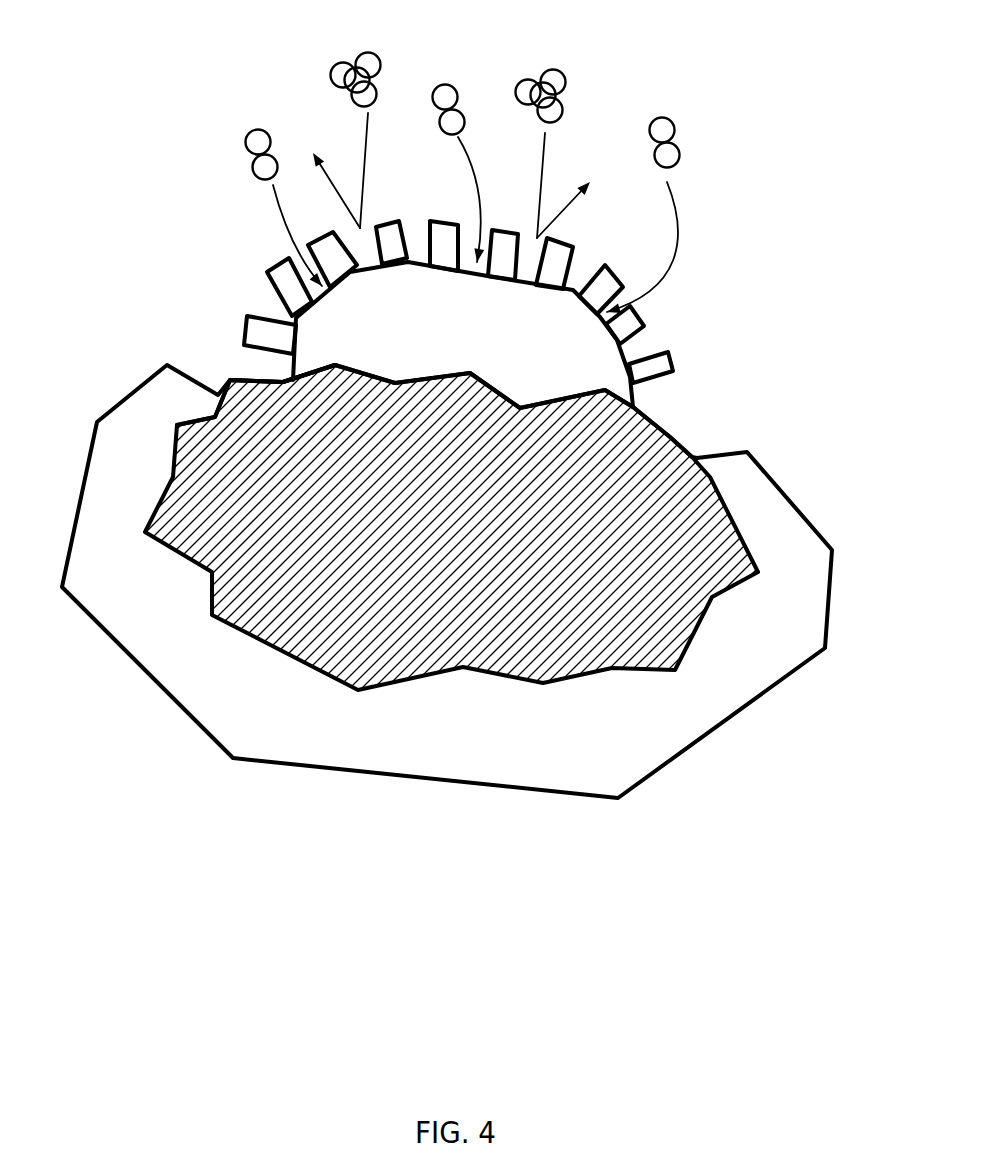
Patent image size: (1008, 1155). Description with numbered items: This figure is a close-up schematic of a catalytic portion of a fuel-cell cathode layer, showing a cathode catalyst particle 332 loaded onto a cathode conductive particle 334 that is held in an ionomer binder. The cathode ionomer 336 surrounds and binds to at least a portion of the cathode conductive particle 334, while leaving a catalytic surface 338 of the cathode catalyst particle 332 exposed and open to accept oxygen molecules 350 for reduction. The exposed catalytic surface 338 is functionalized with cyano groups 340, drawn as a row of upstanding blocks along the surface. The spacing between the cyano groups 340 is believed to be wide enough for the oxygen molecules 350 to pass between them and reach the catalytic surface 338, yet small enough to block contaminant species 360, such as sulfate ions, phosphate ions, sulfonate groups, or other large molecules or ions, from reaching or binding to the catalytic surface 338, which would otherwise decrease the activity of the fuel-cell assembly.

The cathode catalyst particle 332 is at (617, 387).
The cathode conductive particle 334 is at (232, 377).
The cathode ionomer 336 is at (778, 508).
The catalytic surface 338 is at (415, 258).
The cyano groups 340 is at (273, 268).
The oxygen molecules 350 is at (250, 128).
The contaminant species 360 is at (335, 67).